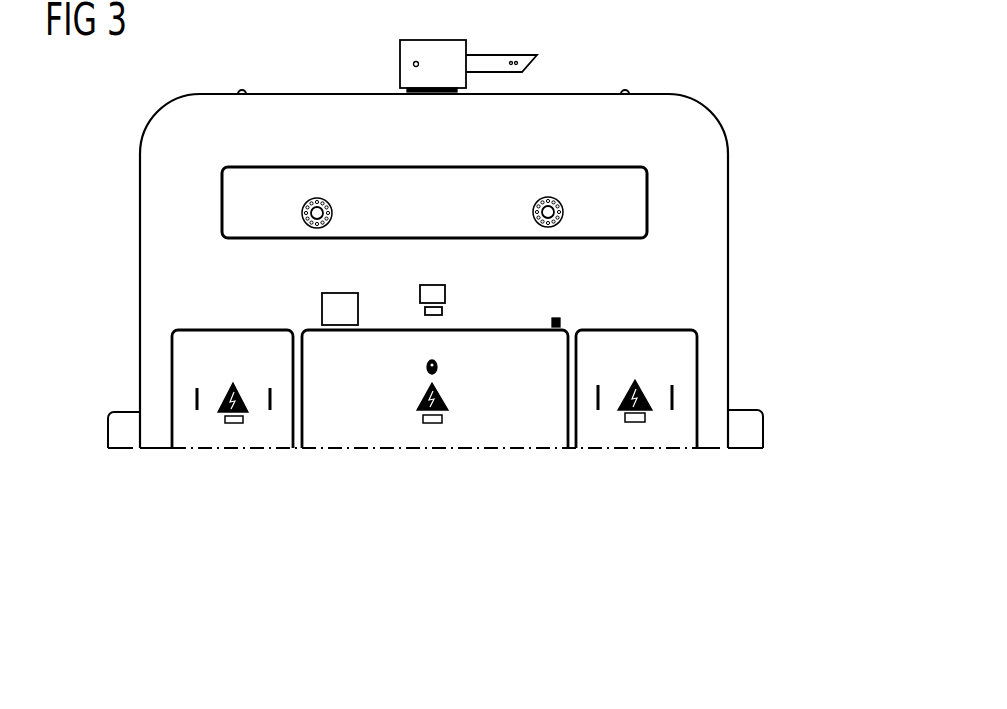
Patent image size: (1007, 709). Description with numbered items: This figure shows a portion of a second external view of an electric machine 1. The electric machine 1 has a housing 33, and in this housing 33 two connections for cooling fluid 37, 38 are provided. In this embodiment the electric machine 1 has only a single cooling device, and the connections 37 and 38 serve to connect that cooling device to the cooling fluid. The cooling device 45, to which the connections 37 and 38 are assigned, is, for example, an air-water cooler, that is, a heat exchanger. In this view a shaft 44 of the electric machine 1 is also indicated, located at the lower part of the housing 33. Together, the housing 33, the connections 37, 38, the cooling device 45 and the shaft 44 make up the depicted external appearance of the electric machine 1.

The electric machine 1 is at (735, 92).
The housing 33 is at (707, 283).
The connection for cooling fluid 37 is at (313, 193).
The connection for cooling fluid 38 is at (542, 193).
The shaft 44 is at (125, 425).
The first cooling device 45 is at (435, 195).